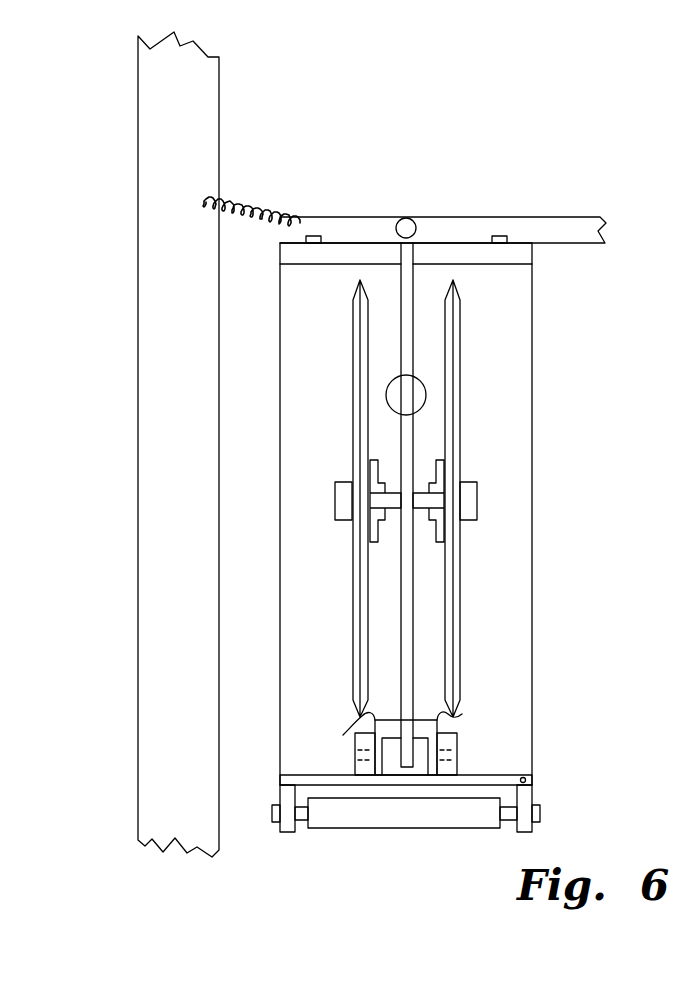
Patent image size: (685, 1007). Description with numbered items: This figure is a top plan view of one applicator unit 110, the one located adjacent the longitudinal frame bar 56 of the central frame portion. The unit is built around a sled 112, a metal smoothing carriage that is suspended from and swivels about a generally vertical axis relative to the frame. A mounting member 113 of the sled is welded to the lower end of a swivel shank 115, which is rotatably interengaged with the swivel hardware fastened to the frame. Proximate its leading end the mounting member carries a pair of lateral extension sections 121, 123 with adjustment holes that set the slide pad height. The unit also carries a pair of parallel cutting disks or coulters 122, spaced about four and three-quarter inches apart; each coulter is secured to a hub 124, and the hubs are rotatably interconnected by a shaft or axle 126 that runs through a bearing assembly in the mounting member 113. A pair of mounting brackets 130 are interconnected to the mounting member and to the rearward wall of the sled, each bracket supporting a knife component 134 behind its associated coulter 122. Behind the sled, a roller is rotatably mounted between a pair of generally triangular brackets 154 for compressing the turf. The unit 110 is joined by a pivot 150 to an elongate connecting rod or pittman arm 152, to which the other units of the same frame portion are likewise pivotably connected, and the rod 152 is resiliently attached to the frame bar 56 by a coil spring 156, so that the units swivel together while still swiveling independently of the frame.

The longitudinal element 56 is at (138, 450).
The applicator unit 110 is at (619, 427).
The sled 112 is at (532, 625).
The mounting member 113 is at (414, 333).
The swivel shank 115 is at (427, 395).
The lateral extension section 121 is at (313, 265).
The coulter 122 is at (353, 678).
The lateral extension section 123 is at (430, 253).
The hub 124 is at (371, 467).
The shaft or axle 126 is at (417, 491).
The mounting bracket 130 is at (462, 714).
The knife component 134 is at (458, 752).
The pivot 150 is at (395, 221).
The connecting rod 152 is at (530, 216).
The bracket 154 is at (523, 801).
The coil spring 156 is at (250, 203).